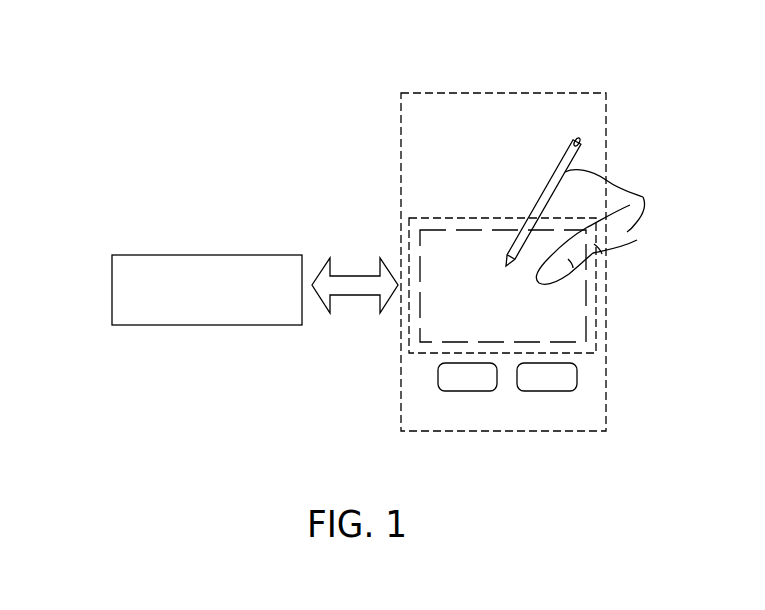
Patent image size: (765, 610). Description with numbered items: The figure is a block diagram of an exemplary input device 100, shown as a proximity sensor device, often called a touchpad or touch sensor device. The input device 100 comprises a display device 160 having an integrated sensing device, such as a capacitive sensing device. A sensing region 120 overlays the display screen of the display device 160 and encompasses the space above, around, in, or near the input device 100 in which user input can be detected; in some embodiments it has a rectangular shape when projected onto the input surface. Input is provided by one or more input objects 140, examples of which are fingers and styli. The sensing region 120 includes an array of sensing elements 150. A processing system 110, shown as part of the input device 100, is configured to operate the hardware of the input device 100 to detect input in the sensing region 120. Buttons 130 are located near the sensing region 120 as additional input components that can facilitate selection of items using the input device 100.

The input device 100 is at (352, 130).
The processing system 110 is at (112, 285).
The sensing region 120 is at (606, 298).
The buttons 130 is at (469, 392).
The input objects 140 is at (640, 198).
The array of sensing elements 150 is at (457, 230).
The display device 160 is at (606, 120).